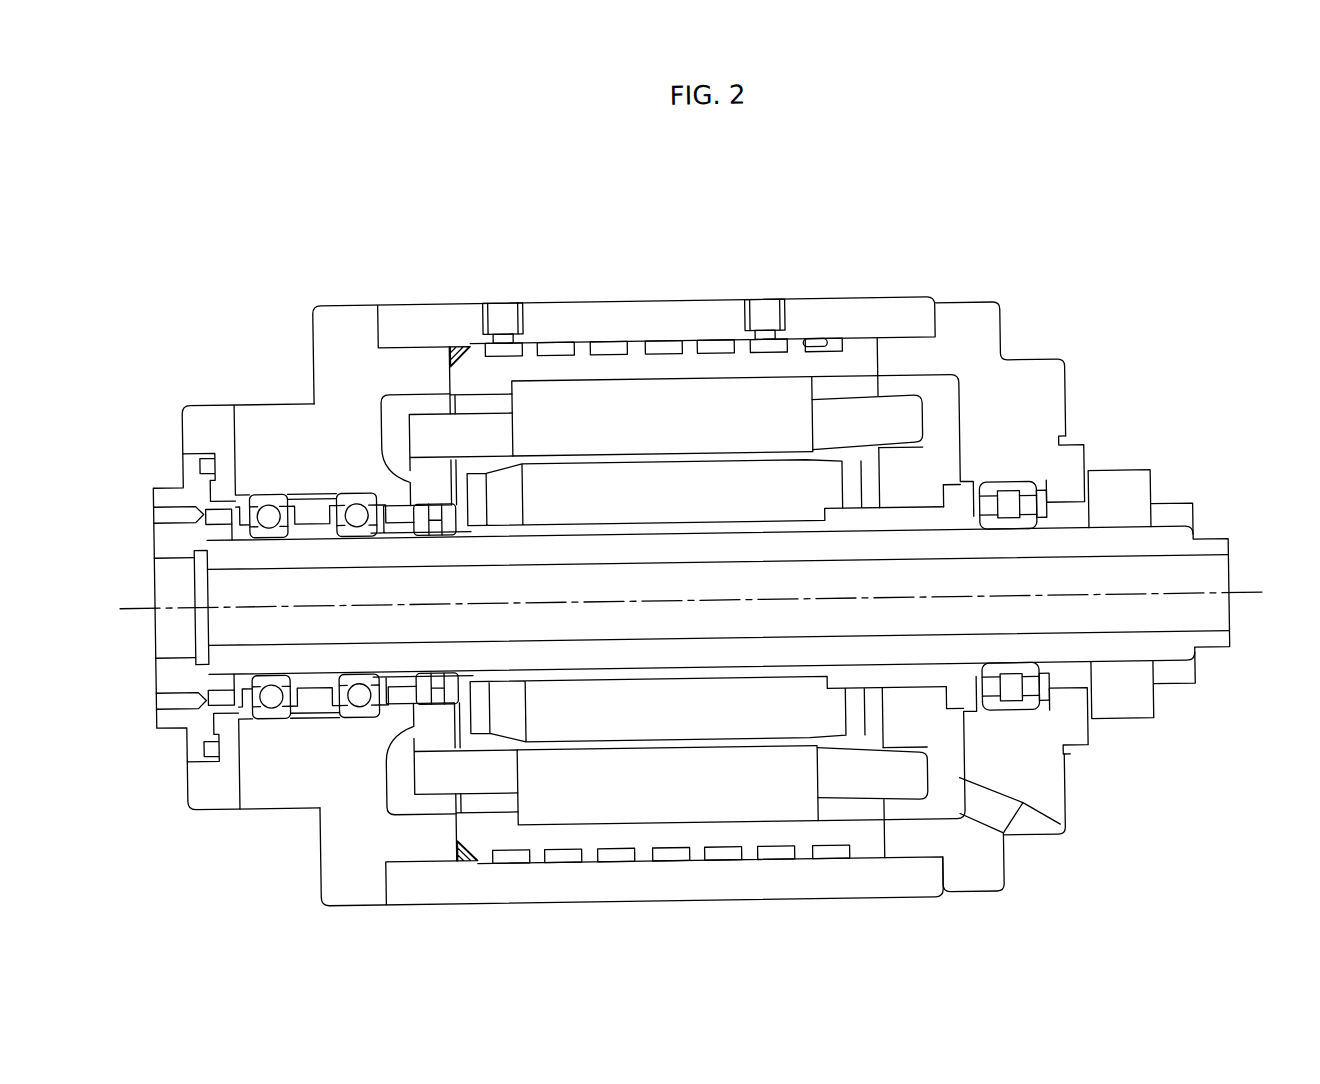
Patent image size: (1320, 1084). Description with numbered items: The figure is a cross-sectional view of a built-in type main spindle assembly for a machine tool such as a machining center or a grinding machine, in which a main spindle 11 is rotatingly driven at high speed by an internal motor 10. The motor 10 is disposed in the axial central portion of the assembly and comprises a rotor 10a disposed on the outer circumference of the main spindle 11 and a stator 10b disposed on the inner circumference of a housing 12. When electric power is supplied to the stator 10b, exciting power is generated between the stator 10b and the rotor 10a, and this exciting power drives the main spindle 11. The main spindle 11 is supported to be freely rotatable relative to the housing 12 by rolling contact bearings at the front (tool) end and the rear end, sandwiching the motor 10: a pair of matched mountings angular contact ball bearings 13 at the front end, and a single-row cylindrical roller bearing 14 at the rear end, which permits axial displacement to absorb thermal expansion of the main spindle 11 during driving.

The motor 10 is at (850, 376).
The rotor 10a is at (585, 478).
The stator 10b is at (645, 400).
The main spindle 11 is at (1104, 560).
The housing 12 is at (724, 300).
The matched mountings angular contact ball bearings 13 is at (303, 478).
The single-row cylindrical roller bearing 14 is at (1012, 484).